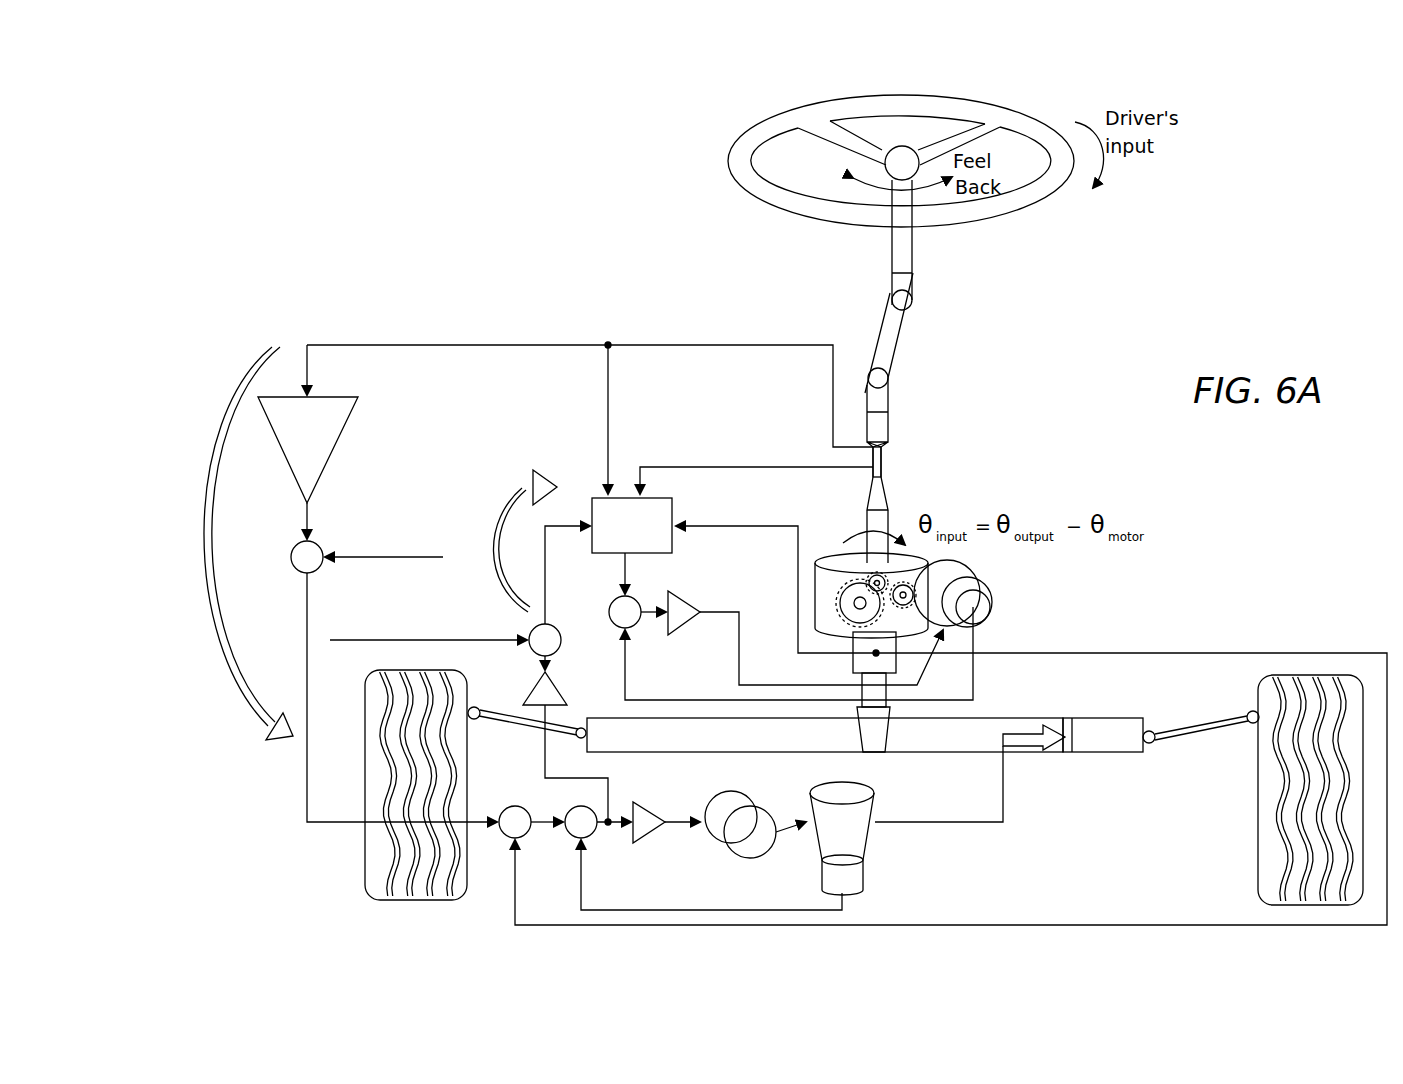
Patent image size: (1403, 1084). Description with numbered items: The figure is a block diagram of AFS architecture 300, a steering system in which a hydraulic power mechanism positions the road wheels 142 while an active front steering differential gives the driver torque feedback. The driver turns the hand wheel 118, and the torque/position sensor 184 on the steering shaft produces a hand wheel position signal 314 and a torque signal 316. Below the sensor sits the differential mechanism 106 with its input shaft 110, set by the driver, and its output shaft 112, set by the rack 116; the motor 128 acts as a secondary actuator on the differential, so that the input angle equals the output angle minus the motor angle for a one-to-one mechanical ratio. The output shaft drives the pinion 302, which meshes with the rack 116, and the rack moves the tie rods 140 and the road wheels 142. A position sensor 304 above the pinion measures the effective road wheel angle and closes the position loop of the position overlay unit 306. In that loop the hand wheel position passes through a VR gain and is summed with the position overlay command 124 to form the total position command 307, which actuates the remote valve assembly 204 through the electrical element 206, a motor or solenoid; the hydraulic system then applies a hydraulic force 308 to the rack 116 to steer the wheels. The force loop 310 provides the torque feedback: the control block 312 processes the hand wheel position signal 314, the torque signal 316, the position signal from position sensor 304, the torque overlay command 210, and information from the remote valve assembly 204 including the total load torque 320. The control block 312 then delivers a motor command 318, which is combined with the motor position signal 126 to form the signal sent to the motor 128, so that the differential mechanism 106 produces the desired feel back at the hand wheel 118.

The hand wheel 118 is at (777, 110).
The differential mechanism 106 is at (925, 556).
The torque/position sensor 184 is at (970, 438).
The input shaft 110 is at (870, 546).
The motor 128 is at (998, 597).
The position sensor 304 is at (853, 663).
The output shaft 112 is at (880, 698).
The pinion 302 is at (878, 745).
The rack 116 is at (1097, 728).
The hydraulic force 308 is at (1092, 795).
The tie rods 140 is at (505, 710).
The road wheels 142 is at (367, 880).
The hand wheel position signal 314 is at (742, 318).
The torque signal 316 is at (708, 438).
The AFS architecture 300 is at (605, 290).
The position overlay unit 306 is at (193, 732).
The position overlay command 124 is at (411, 507).
The torque overlay command 210 is at (400, 617).
The force loop 310 is at (490, 430).
The control block 312 is at (632, 525).
The motor command 318 is at (697, 558).
The motor position signal 126 is at (706, 666).
The load torque (total) 320 is at (540, 763).
The total position command 307 is at (180, 832).
The electrical element 206 is at (718, 838).
The remote valve assembly 204 is at (940, 880).